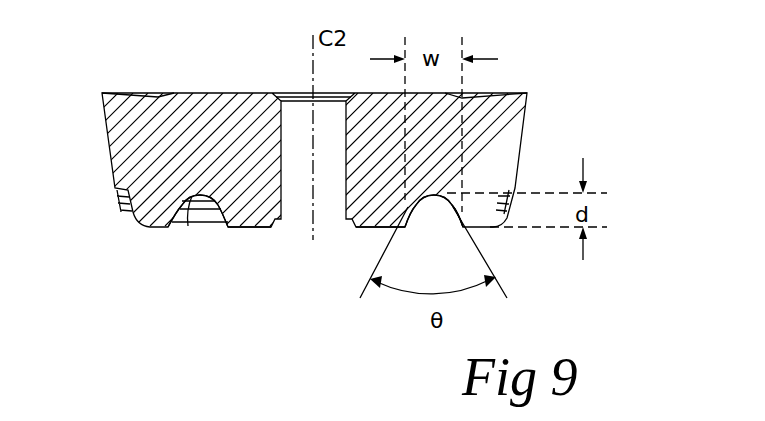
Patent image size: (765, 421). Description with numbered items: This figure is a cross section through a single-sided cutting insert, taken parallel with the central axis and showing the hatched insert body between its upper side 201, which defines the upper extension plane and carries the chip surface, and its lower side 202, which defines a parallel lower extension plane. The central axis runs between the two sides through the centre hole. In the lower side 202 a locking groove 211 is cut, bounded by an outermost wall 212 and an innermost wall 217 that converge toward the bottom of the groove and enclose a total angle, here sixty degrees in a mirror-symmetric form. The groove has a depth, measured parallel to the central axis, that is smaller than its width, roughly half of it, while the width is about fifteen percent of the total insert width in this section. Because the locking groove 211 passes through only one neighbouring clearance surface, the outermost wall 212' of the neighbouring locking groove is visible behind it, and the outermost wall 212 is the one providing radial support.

The upper side 201 is at (250, 93).
The lower side 202 is at (242, 228).
The locking groove 211 is at (190, 198).
The outermost wall of the neighbouring locking groove 212' is at (200, 251).
The innermost wall 217 is at (423, 212).
The outermost wall 212 is at (509, 244).